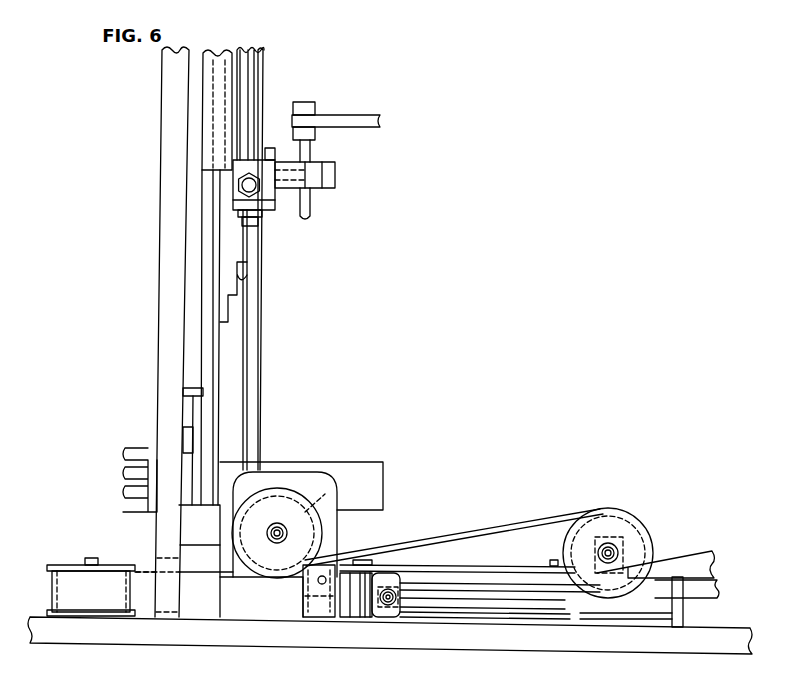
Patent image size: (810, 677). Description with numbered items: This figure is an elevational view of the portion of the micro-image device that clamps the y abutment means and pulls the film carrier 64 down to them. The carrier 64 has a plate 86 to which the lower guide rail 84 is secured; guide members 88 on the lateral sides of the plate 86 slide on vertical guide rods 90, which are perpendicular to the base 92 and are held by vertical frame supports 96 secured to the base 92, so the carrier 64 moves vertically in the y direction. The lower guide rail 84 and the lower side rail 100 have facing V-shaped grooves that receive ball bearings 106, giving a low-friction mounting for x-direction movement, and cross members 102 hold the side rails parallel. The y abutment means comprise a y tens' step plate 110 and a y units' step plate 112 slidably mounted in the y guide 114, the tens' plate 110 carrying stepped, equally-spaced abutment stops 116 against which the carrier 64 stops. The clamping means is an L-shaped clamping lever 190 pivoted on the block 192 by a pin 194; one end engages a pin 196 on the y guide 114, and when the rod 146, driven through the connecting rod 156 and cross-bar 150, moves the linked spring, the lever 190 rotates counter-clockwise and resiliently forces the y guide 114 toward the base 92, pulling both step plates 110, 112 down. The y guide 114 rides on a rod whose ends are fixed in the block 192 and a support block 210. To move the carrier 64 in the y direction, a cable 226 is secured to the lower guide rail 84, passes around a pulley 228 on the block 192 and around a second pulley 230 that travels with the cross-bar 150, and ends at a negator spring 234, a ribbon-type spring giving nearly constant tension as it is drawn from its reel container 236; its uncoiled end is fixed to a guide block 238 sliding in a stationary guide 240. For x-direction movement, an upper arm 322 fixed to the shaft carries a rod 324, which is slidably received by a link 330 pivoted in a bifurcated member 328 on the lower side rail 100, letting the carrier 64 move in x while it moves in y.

The carrier 64 is at (268, 64).
The lower guide rail 84 is at (263, 196).
The plate 86 is at (231, 201).
The guide members 88 is at (204, 113).
The vertical guide rods 90 is at (207, 248).
The base 92 is at (64, 641).
The vertical frame supports 96 is at (166, 291).
The lower side rail 100 is at (236, 162).
The cross members 102 is at (246, 56).
The ball bearings 106 is at (242, 185).
The y tens' step plate 110 is at (260, 330).
The y units' step plate 112 is at (228, 536).
The y guide 114 is at (384, 466).
The abutment stops 116 is at (248, 298).
The rod 146 is at (716, 592).
The cross-bar 150 is at (598, 605).
The connecting rod 156 is at (696, 557).
The clamping lever 190 is at (339, 526).
The block 192 is at (216, 572).
The pin 194 is at (312, 500).
The pin 196 is at (222, 506).
The support block 210 is at (190, 384).
The cable 226 is at (249, 360).
The pulley 228 is at (249, 562).
The second pulley 230 is at (612, 508).
The negator spring 234 is at (261, 603).
The reel container 236 is at (60, 565).
The guide block 238 is at (428, 608).
The stationary guide 240 is at (684, 620).
The upper arm 322 is at (366, 115).
The rod 324 is at (312, 206).
The bifurcated member 328 is at (270, 160).
The link 330 is at (336, 172).